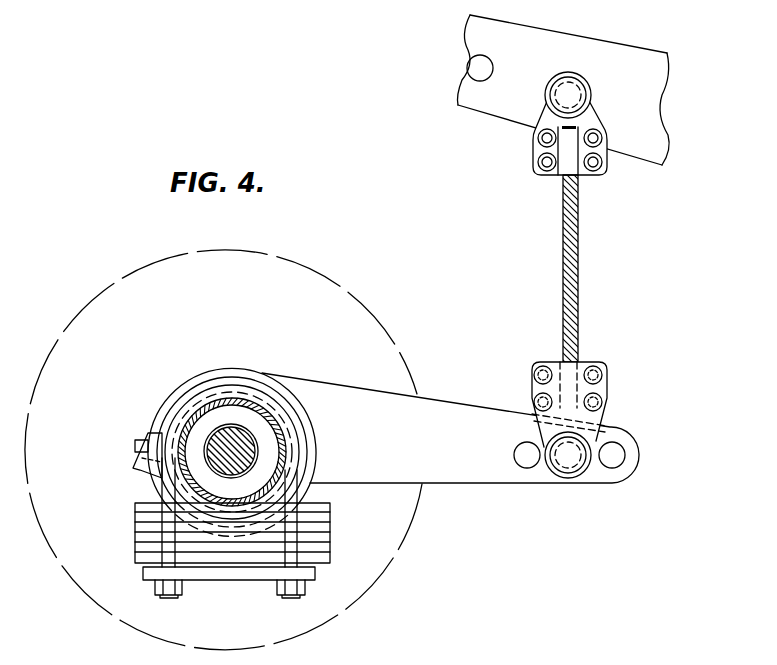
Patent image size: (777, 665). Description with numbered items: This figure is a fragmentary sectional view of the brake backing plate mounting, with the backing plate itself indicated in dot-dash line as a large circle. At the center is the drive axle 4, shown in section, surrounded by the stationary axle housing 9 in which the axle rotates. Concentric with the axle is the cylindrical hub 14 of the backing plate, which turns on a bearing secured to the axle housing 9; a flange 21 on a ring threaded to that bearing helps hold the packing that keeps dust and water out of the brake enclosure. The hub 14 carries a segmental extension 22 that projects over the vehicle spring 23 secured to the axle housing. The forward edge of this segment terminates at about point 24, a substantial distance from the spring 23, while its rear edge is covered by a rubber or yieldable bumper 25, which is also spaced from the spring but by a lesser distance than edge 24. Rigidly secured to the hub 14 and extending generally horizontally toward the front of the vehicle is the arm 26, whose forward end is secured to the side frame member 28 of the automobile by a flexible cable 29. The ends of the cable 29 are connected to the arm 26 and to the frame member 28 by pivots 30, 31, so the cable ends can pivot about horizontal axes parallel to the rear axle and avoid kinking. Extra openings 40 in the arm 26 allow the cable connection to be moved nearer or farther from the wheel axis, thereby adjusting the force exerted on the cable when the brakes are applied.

The drive axle 4 is at (215, 440).
The axle housing 9 is at (264, 408).
The cylindrical hub 14 is at (312, 448).
The flange 21 is at (282, 500).
The extension 22 is at (243, 373).
The vehicle spring 23 is at (320, 515).
The forward edge point 24 is at (295, 410).
The bumper 25 is at (142, 463).
The arm 26 is at (448, 417).
The side frame member 28 is at (658, 107).
The cable 29 is at (573, 260).
The pivot 30 is at (577, 448).
The pivot 31 is at (575, 90).
The extra openings 40 is at (525, 460).